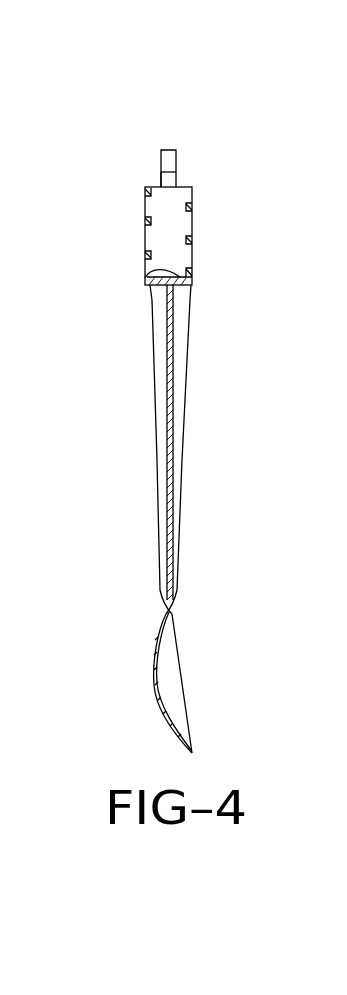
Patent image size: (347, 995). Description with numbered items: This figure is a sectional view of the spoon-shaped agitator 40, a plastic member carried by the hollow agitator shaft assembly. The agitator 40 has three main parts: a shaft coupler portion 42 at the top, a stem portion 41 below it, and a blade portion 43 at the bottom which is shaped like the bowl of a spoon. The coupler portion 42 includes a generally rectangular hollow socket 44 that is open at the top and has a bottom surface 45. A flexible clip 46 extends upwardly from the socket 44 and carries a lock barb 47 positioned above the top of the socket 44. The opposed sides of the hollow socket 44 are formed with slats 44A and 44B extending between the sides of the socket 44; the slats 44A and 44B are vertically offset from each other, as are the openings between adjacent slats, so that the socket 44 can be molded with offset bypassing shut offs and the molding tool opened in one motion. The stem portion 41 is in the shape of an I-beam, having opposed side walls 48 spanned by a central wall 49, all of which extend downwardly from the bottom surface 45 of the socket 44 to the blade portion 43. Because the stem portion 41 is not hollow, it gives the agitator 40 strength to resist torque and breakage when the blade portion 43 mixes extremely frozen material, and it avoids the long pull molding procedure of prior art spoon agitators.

The agitator 40 is at (216, 142).
The stem portion 41 is at (197, 403).
The shaft coupler portion 42 is at (208, 190).
The blade portion 43 is at (167, 672).
The hollow socket 44 is at (167, 200).
The slats 44A is at (148, 222).
The slats 44B is at (190, 208).
The bottom surface 45 is at (158, 271).
The flexible clip 46 is at (167, 182).
The lock barb 47 is at (166, 152).
The side walls 48 is at (178, 330).
The central wall 49 is at (168, 437).